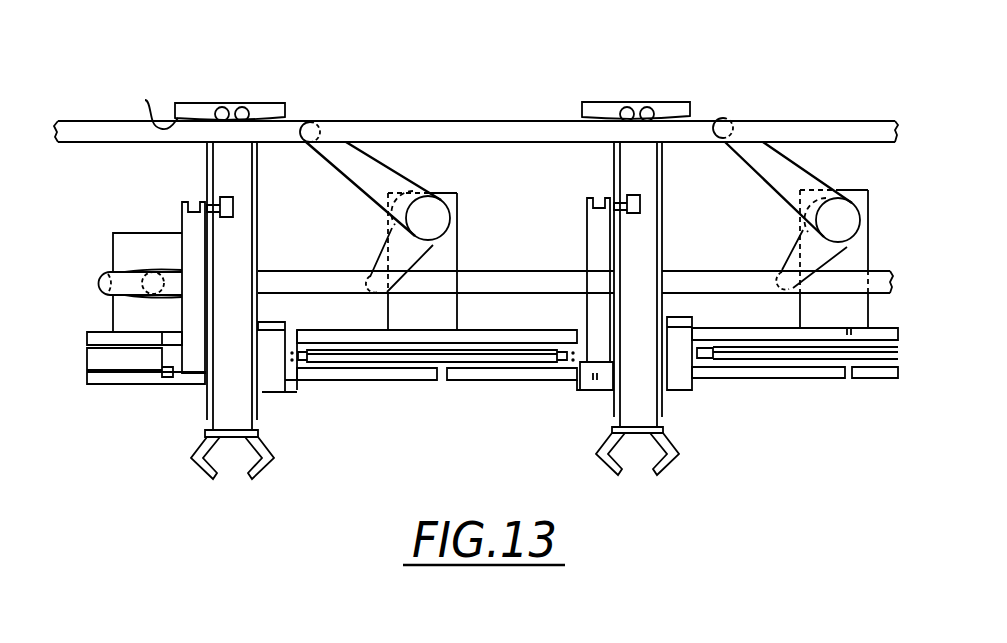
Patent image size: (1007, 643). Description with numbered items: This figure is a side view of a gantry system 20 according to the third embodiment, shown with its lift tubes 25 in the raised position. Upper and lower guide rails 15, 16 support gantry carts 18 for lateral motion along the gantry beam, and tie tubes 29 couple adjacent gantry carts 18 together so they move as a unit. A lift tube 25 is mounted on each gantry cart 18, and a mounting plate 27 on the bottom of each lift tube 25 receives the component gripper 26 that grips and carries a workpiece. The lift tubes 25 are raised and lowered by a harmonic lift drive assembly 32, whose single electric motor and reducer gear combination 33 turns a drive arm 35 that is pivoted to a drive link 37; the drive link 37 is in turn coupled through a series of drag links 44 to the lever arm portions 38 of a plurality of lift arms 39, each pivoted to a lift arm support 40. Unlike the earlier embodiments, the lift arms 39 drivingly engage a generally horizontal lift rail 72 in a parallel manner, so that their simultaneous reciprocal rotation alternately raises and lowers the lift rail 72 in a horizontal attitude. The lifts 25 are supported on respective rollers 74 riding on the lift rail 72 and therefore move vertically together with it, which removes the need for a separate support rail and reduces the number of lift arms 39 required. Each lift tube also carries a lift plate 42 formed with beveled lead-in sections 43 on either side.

The gantry system 20 is at (421, 84).
The lift rail 72 is at (477, 125).
The lift plate 42 is at (222, 103).
The rollers 74 is at (246, 108).
The beveled lead-in sections 43 is at (141, 106).
The lift tube 25 is at (225, 157).
The harmonic lift drive assembly 32 is at (146, 218).
The electric motor and reducer gear combination 33 is at (122, 237).
The drive link 37 is at (122, 277).
The drive arm 35 is at (137, 297).
The mounting plate 27 is at (213, 437).
The component gripper 26 is at (213, 480).
The drag link 44 is at (518, 278).
The lift arm 39 is at (377, 168).
The lift arm support 40 is at (445, 190).
The lever arm portion 38 is at (390, 248).
The gantry cart 18 is at (280, 363).
The upper guide rail 15 is at (485, 333).
The tie tube 29 is at (398, 358).
The lower guide rail 16 is at (493, 378).